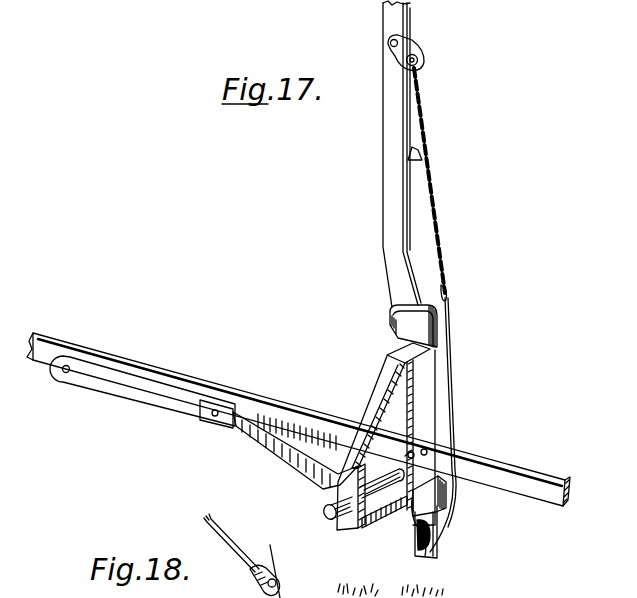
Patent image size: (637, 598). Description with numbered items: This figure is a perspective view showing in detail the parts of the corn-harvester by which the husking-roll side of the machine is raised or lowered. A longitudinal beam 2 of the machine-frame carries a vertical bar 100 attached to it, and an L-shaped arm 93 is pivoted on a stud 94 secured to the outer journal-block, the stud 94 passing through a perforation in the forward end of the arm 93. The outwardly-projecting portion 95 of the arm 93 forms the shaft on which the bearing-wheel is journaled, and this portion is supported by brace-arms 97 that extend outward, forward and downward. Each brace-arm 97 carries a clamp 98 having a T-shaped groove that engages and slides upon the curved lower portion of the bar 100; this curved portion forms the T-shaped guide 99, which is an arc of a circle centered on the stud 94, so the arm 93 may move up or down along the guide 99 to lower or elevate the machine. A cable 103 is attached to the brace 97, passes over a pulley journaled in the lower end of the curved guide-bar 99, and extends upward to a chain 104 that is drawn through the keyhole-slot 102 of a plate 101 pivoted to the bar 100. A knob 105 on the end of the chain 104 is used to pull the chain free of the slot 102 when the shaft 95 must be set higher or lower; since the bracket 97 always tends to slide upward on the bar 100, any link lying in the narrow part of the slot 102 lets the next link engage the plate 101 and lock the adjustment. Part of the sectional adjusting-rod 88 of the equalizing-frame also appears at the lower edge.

In FIG. 17, the longitudinal beam 2 is at (138, 364).
In FIG. 17, the L-shaped arm 93 is at (288, 432).
In FIG. 17, the stud 94 is at (68, 372).
In FIG. 17, the outwardly-projecting portion 95 is at (328, 516).
In FIG. 17, the brace-arm 97 is at (386, 396).
In FIG. 17, the clamp 98 is at (412, 331).
In FIG. 17, the T-shaped guide 99 is at (420, 437).
In FIG. 17, the vertical bar 100 is at (386, 183).
In FIG. 17, the plate 101 is at (414, 50).
In FIG. 17, the keyhole-slot 102 is at (416, 64).
In FIG. 17, the cable 103 is at (452, 390).
In FIG. 17, the chain 104 is at (432, 204).
In FIG. 17, the knob or handle 105 is at (422, 155).
In FIG. 18, the sectional adjusting-rod 88 is at (256, 567).